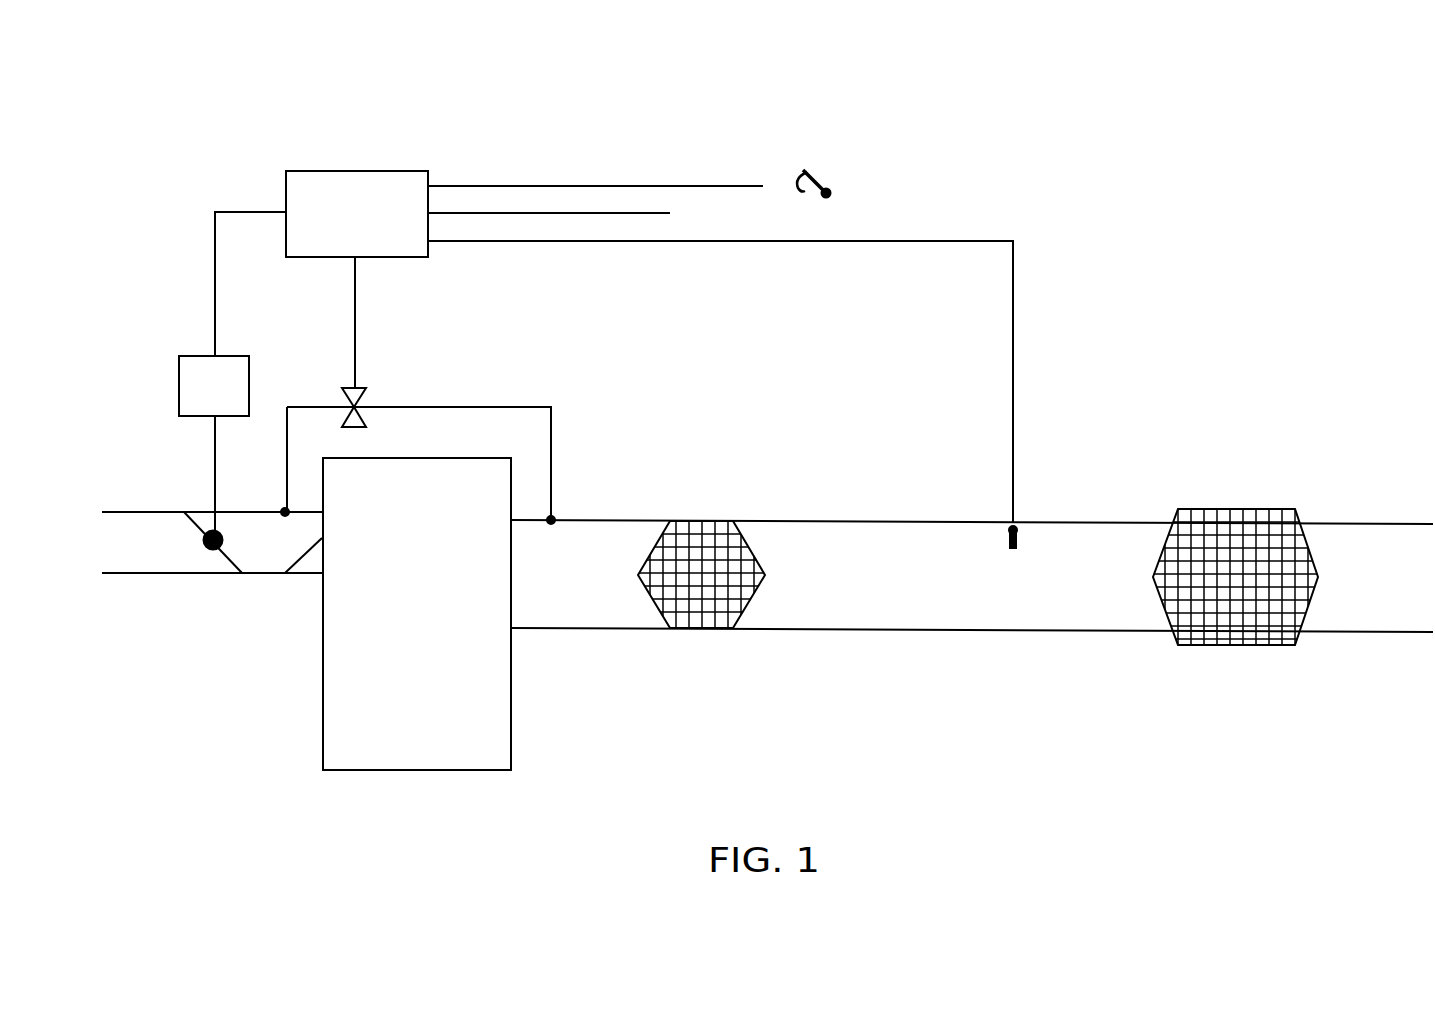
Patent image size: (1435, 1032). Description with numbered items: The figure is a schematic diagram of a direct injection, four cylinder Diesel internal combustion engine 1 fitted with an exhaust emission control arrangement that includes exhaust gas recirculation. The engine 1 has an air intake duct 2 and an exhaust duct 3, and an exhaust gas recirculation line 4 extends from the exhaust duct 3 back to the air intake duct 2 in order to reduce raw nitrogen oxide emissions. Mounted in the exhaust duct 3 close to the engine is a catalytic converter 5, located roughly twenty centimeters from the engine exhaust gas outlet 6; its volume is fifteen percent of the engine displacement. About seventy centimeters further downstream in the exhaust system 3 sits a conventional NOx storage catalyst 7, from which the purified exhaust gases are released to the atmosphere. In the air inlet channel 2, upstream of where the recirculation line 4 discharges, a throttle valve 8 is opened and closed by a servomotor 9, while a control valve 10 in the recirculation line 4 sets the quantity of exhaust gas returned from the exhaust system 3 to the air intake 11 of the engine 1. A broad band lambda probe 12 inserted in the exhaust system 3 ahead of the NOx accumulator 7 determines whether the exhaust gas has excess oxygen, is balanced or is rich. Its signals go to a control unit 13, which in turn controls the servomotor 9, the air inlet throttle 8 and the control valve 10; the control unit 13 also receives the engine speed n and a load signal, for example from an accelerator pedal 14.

The Diesel internal combustion engine 1 is at (430, 616).
The air intake duct 2 is at (258, 510).
The exhaust duct 3 is at (818, 679).
The exhaust gas recirculation line 4 is at (553, 445).
The catalytic converter 5 is at (708, 528).
The engine exhaust gas outlet 6 is at (513, 570).
The NOx storage catalyst 7 is at (1245, 517).
The throttle valve 8 is at (228, 560).
The servomotor 9 is at (197, 354).
The control valve 10 is at (364, 399).
The air intake 11 is at (285, 573).
The broad band lambda probe 12 is at (1017, 540).
The control unit 13 is at (343, 227).
The accelerator pedal 14 is at (820, 180).